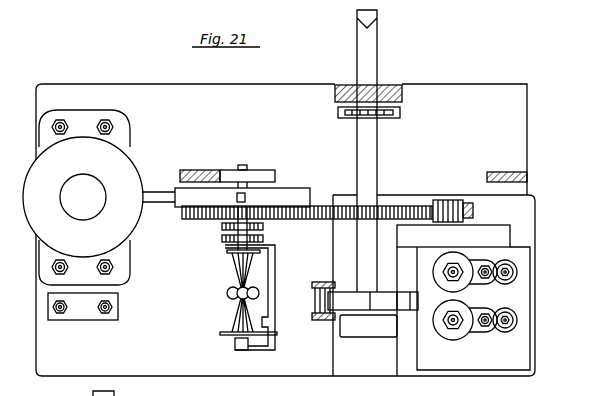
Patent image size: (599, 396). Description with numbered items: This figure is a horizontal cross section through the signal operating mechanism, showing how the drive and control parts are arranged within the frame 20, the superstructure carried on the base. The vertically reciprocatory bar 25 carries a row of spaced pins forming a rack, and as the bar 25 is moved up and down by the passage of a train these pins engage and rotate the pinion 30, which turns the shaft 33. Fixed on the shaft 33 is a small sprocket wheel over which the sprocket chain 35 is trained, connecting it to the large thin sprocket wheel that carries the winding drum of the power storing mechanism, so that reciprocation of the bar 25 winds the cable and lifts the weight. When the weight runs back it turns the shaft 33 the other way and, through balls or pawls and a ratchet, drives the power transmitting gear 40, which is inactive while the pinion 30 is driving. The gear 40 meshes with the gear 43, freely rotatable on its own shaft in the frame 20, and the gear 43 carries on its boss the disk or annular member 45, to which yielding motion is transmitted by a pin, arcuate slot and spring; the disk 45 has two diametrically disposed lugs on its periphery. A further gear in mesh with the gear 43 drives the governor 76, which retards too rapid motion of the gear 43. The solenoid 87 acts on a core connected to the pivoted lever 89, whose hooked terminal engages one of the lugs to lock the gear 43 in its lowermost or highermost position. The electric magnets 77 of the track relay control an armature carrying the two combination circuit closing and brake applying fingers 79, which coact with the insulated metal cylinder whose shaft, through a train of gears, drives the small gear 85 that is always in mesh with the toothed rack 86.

The combination circuit closing and brake applying fingers 79 is at (157, 364).
The solenoid 87 is at (36, 174).
The lever 89 is at (163, 203).
The disk or annular member 45 is at (297, 195).
The power transmitting gear 40 is at (340, 205).
The gear 43 is at (221, 221).
The governor 76 is at (228, 293).
The shaft 33 is at (373, 49).
The frame 20 is at (371, 85).
The sprocket chain 35 is at (395, 117).
The small gear 85 is at (445, 200).
The toothed rack 86 is at (468, 203).
The pinion 30 is at (343, 292).
The vertically reciprocatory bar 25 is at (316, 314).
The electric magnets 77 is at (458, 332).